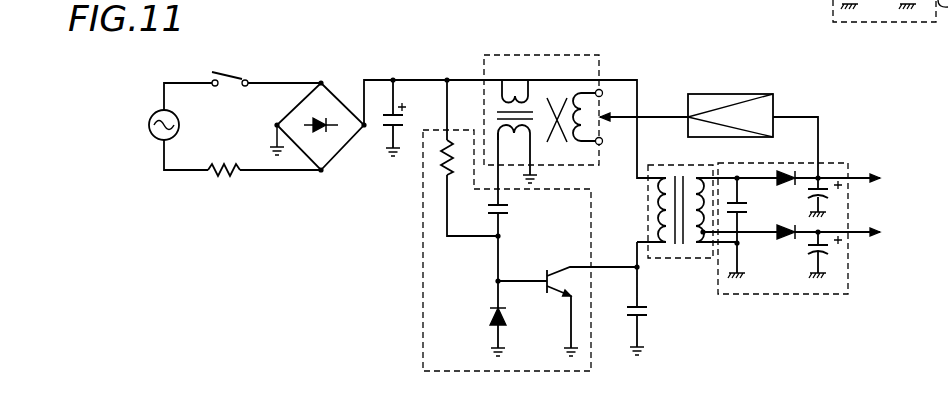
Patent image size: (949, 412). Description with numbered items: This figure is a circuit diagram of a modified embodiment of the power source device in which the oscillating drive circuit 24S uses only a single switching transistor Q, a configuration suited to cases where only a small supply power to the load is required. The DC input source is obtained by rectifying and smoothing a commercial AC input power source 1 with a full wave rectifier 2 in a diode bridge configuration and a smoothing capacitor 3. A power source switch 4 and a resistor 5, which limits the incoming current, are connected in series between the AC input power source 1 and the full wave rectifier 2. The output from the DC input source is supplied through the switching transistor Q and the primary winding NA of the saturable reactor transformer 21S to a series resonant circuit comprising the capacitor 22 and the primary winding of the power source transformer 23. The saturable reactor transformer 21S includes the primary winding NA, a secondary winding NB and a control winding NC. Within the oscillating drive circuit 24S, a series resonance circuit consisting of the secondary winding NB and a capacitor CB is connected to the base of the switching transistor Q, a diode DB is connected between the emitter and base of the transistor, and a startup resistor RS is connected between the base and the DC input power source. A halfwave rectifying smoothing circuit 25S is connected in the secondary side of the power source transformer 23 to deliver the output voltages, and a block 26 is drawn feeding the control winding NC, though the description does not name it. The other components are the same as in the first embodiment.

The commercial AC input power source 1 is at (149, 115).
The full wave rectifier 2 is at (339, 100).
The smoothing capacitor 3 is at (383, 116).
The power source switch 4 is at (236, 72).
The resistor 5 is at (222, 180).
The saturable reactor transformer 21S is at (543, 55).
The capacitor 22 is at (650, 312).
The power source transformer 23 is at (680, 260).
The oscillating drive circuit 24S is at (423, 290).
The halfwave rectifying smoothing circuit 25S is at (803, 296).
The control circuit 26 is at (739, 93).